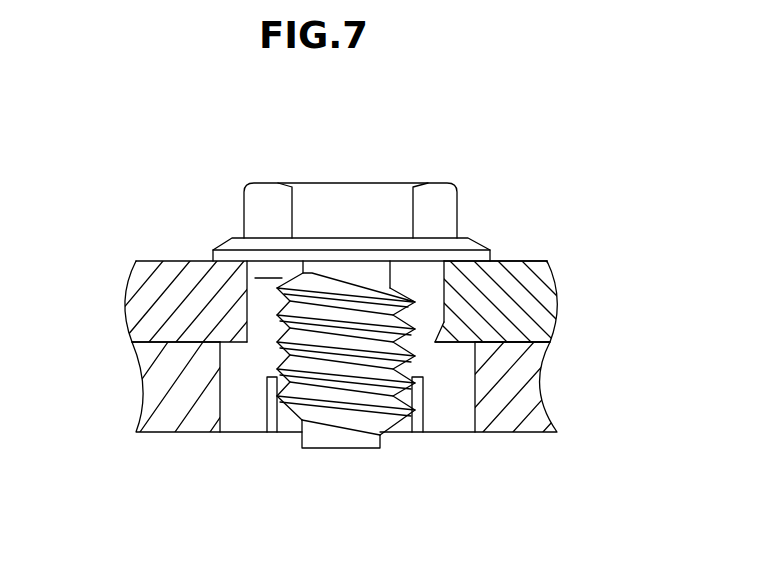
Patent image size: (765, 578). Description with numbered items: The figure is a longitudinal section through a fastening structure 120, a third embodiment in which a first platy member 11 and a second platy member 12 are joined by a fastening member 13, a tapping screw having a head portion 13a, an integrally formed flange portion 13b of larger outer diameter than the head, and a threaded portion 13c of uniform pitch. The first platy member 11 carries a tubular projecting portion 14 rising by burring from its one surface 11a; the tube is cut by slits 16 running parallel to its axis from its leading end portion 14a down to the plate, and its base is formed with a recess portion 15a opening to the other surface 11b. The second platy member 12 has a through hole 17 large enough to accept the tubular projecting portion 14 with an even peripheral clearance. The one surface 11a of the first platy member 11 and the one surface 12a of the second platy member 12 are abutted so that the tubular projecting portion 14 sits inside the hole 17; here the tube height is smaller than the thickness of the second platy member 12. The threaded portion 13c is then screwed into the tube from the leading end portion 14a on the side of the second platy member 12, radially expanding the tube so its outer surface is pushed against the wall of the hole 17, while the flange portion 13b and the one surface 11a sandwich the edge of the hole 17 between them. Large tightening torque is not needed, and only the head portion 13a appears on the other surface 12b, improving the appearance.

The fastening structure 120 is at (469, 127).
The fastening member 13 is at (357, 182).
The head portion 13a is at (437, 203).
The flange portion 13b is at (492, 250).
The threaded portion 13c is at (288, 440).
The second platy member 12 is at (158, 278).
The one surface of the second platy member 12a is at (528, 344).
The other surface of the second platy member 12b is at (548, 265).
The tubular projecting portion 14 is at (260, 303).
The leading end portion 14a is at (270, 278).
The hole 17 is at (446, 292).
The first platy member 11 is at (142, 383).
The one surface of the first platy member 11a is at (163, 340).
The other surface of the first platy member 11b is at (518, 433).
The slit 16 is at (222, 393).
The recess portion 15a is at (271, 418).